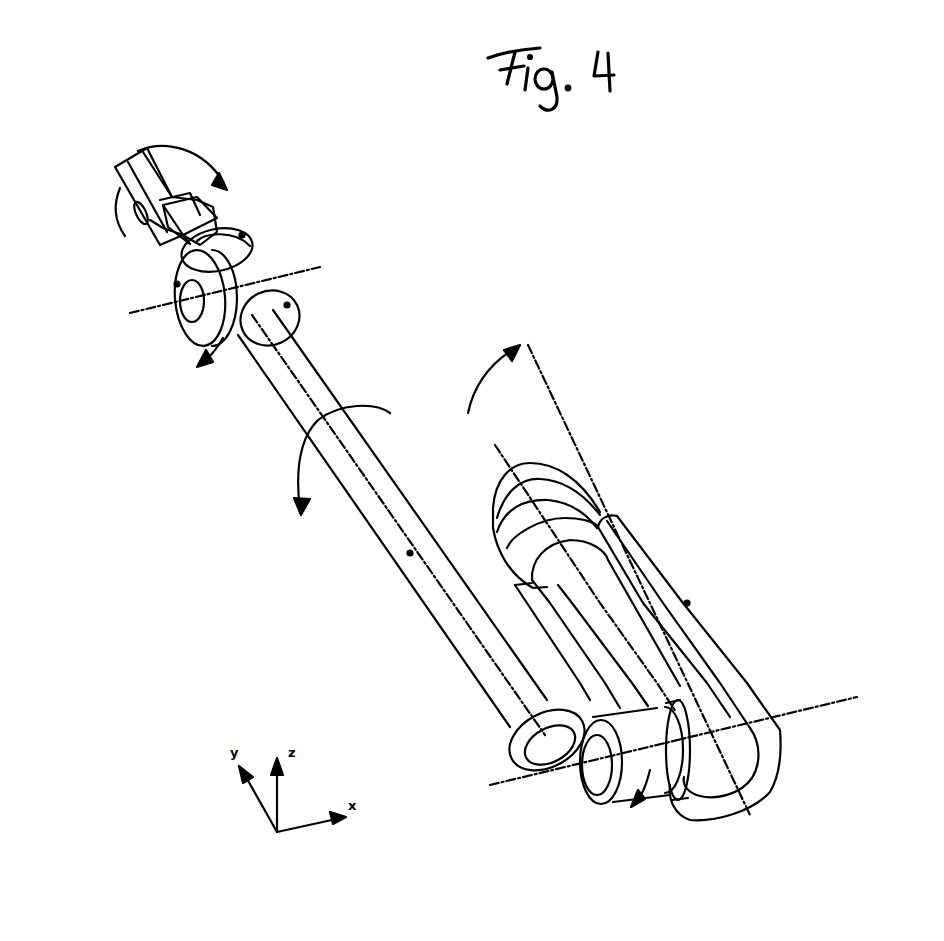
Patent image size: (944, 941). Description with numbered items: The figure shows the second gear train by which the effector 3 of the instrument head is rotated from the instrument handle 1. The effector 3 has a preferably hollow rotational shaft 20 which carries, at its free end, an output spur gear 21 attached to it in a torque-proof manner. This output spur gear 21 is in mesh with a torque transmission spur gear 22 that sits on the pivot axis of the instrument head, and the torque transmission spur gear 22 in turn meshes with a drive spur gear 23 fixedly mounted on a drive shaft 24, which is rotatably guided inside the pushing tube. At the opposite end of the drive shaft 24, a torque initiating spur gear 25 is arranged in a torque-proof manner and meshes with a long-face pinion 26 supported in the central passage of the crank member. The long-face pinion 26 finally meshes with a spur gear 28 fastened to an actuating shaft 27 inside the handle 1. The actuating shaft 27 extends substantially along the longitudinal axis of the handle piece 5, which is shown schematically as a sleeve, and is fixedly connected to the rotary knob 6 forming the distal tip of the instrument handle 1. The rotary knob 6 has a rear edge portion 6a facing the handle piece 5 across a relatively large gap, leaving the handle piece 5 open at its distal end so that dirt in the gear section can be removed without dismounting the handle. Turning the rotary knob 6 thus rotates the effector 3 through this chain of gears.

The instrument handle 1 is at (696, 530).
The effector 3 is at (142, 139).
The handle piece 5 is at (687, 603).
The rotary knob 6 is at (578, 476).
The rear edge portion 6a is at (573, 510).
The rotational shaft 20 is at (163, 247).
The output spur gear 21 is at (242, 235).
The torque transmission spur gear 22 is at (177, 284).
The drive spur gear 23 is at (287, 305).
The drive shaft 24 is at (410, 553).
The torque initiating spur gear 25 is at (510, 758).
The long-face pinion 26 is at (660, 790).
The actuating shaft 27 is at (655, 668).
The spur gear 28 is at (670, 688).